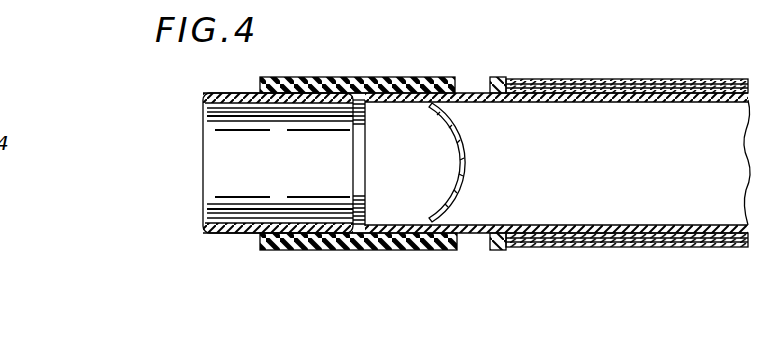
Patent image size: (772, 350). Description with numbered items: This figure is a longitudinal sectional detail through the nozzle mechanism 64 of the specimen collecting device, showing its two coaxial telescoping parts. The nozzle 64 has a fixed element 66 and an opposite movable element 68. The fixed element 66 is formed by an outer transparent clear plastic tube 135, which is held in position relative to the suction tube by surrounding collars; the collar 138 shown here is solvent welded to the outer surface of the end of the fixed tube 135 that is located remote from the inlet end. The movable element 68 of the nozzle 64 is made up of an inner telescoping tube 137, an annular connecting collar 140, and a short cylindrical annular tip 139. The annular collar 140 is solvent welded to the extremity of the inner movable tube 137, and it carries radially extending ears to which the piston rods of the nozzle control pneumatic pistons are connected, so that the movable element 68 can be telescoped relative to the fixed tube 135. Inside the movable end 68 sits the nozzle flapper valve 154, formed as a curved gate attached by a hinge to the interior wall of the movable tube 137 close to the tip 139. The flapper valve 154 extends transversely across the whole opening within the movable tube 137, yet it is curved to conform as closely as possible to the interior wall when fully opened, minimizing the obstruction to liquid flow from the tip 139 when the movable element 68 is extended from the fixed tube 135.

The annular tip 139 is at (210, 233).
The annular connecting collar 140 is at (357, 77).
The movable element 68 is at (471, 88).
The collar 138 is at (514, 77).
The fixed element 66 is at (665, 82).
The nozzle mechanism 64 is at (558, 246).
The outer transparent clear plastic tube 135 is at (650, 247).
The inner telescoping tube 137 is at (468, 238).
The nozzle flapper valve 154 is at (466, 170).